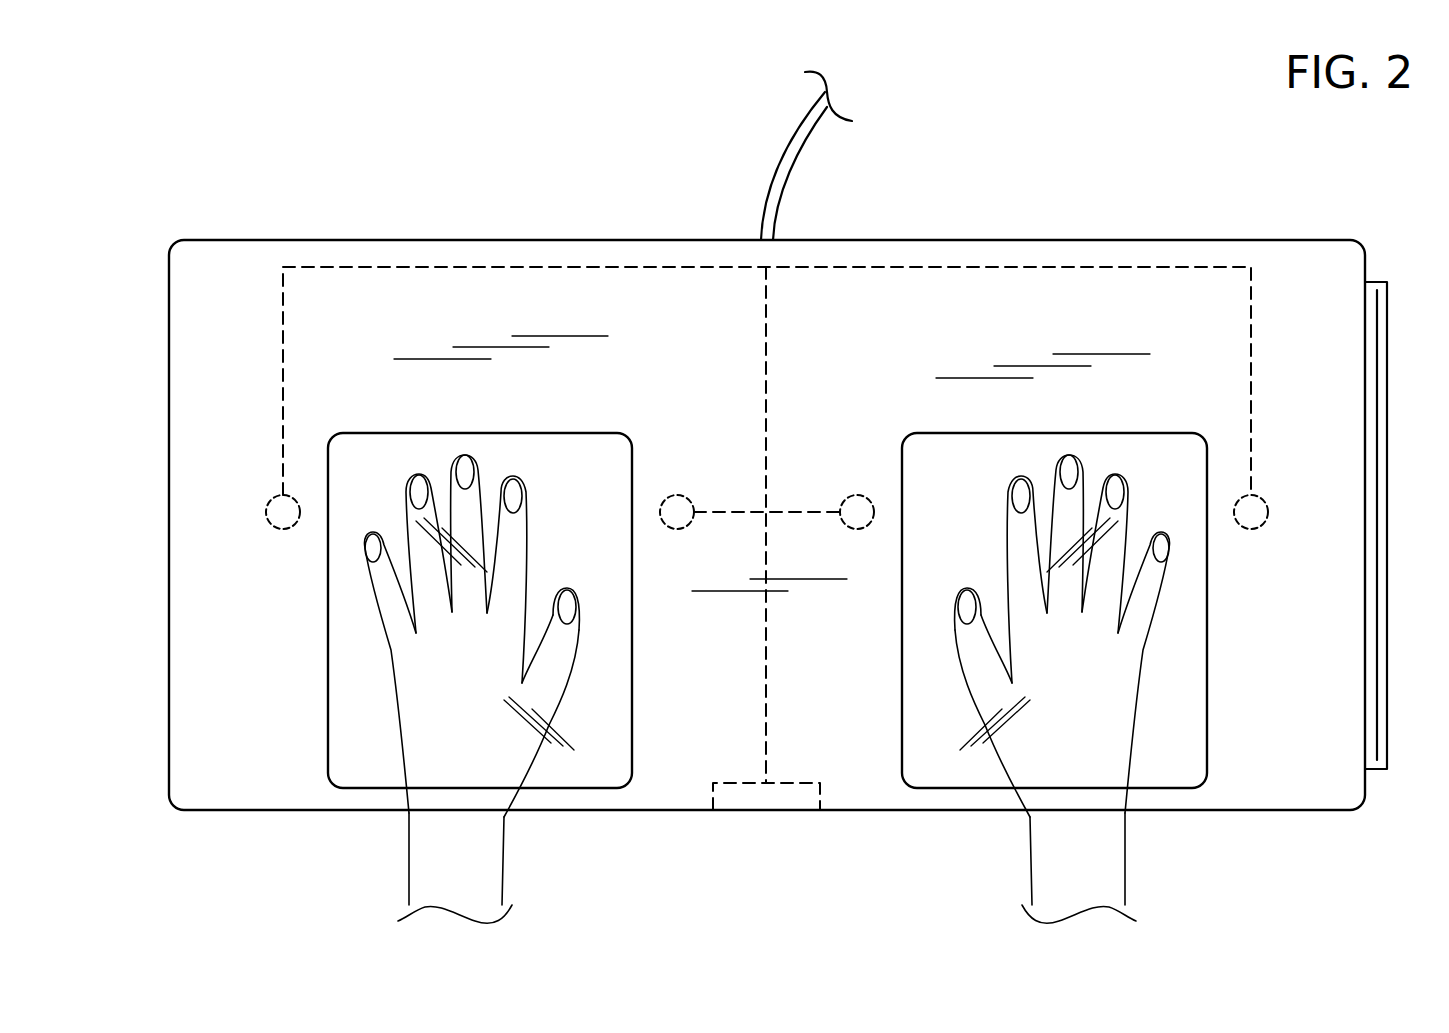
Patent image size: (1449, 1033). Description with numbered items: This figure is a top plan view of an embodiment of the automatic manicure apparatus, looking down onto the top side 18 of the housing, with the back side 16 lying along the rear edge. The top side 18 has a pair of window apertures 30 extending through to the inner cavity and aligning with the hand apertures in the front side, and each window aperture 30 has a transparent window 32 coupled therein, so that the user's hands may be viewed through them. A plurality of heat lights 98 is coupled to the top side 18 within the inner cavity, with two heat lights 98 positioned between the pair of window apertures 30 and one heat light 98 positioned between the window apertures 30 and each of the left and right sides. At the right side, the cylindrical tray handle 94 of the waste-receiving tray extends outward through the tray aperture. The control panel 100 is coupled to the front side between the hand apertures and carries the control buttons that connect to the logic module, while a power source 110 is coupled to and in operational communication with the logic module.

The back side 16 is at (567, 240).
The top side 18 is at (1326, 298).
The window apertures 30 is at (623, 472).
The transparent window 32 is at (927, 473).
The tray handle 94 is at (1387, 603).
The heat lights 98 is at (1240, 527).
The control panel 100 is at (775, 802).
The power source 110 is at (787, 167).